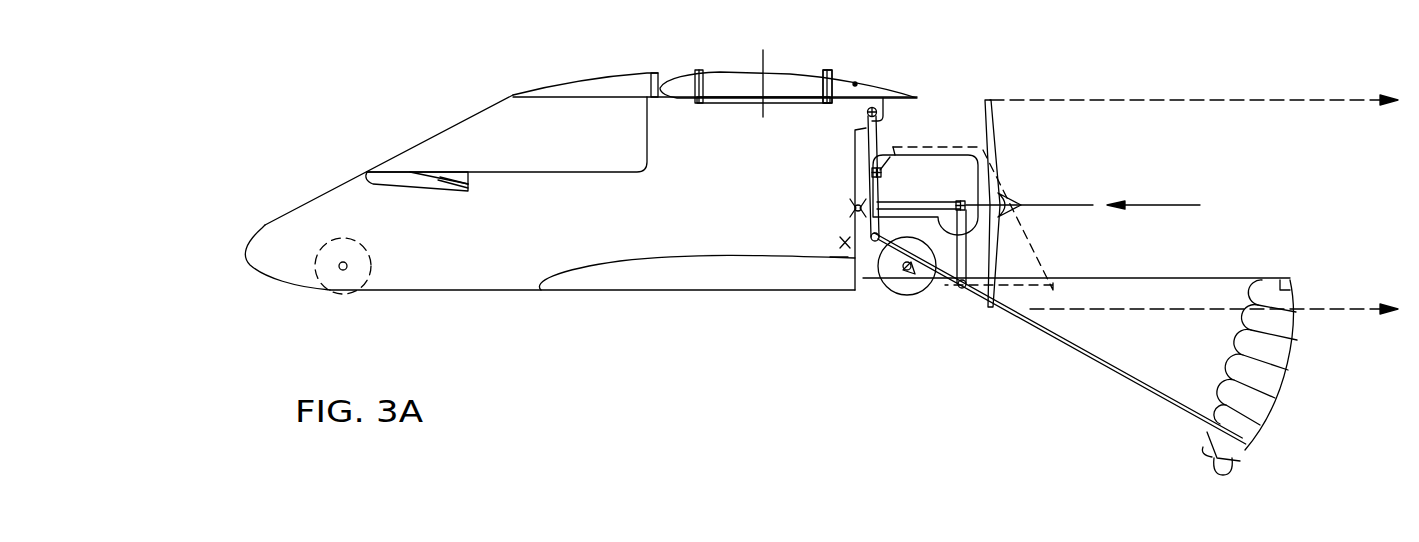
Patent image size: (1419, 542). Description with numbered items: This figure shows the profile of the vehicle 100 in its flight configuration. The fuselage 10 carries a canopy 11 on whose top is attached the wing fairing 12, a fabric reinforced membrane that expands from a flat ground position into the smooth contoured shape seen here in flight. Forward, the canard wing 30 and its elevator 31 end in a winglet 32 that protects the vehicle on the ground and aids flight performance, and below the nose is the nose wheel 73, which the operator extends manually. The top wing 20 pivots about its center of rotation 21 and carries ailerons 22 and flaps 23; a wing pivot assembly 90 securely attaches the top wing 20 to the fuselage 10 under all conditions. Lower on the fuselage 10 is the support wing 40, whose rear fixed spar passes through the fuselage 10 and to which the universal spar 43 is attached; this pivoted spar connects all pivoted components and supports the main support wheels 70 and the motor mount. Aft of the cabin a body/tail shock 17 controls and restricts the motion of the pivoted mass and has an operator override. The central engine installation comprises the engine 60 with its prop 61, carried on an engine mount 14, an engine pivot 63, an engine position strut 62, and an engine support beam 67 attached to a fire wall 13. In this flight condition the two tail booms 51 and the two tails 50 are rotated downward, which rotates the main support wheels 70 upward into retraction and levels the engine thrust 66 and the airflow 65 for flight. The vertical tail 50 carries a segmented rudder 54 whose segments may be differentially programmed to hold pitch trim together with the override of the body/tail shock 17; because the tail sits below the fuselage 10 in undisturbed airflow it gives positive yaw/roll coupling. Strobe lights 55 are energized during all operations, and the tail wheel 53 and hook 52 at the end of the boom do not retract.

The vehicle 100 is at (482, 70).
The fuselage 10 is at (483, 277).
The canopy 11 is at (483, 117).
The wing fairing 12 is at (628, 70).
The canard wing 30 is at (383, 168).
The elevator 31 is at (463, 186).
The winglet 32 is at (443, 193).
The nose wheel 73 is at (343, 292).
The support wing 40 is at (782, 292).
The top wing 20 is at (732, 70).
The center of rotation 21 is at (765, 52).
The ailerons 22 is at (842, 82).
The flaps 23 is at (827, 86).
The wing pivot assembly 90 is at (738, 108).
The body/tail shock 17 is at (868, 134).
The engine position strut 62 is at (877, 193).
The engine support beam 67 is at (852, 208).
The fire wall 13 is at (845, 243).
The engine 60 is at (955, 147).
The engine mount 14 is at (962, 201).
The engine pivot 63 is at (1024, 242).
The universal spar 43 is at (962, 295).
The main support wheels 70 is at (897, 298).
The prop 61 is at (995, 150).
The airflow 65 is at (1145, 97).
The engine thrust 66 is at (1145, 205).
The tail booms 51 is at (1127, 384).
The vertical tail 50 is at (1220, 372).
The segmented rudder 54 is at (1273, 375).
The strobe lights 55 is at (1293, 283).
The hook 52 is at (1213, 453).
The tail wheel 53 is at (1237, 468).